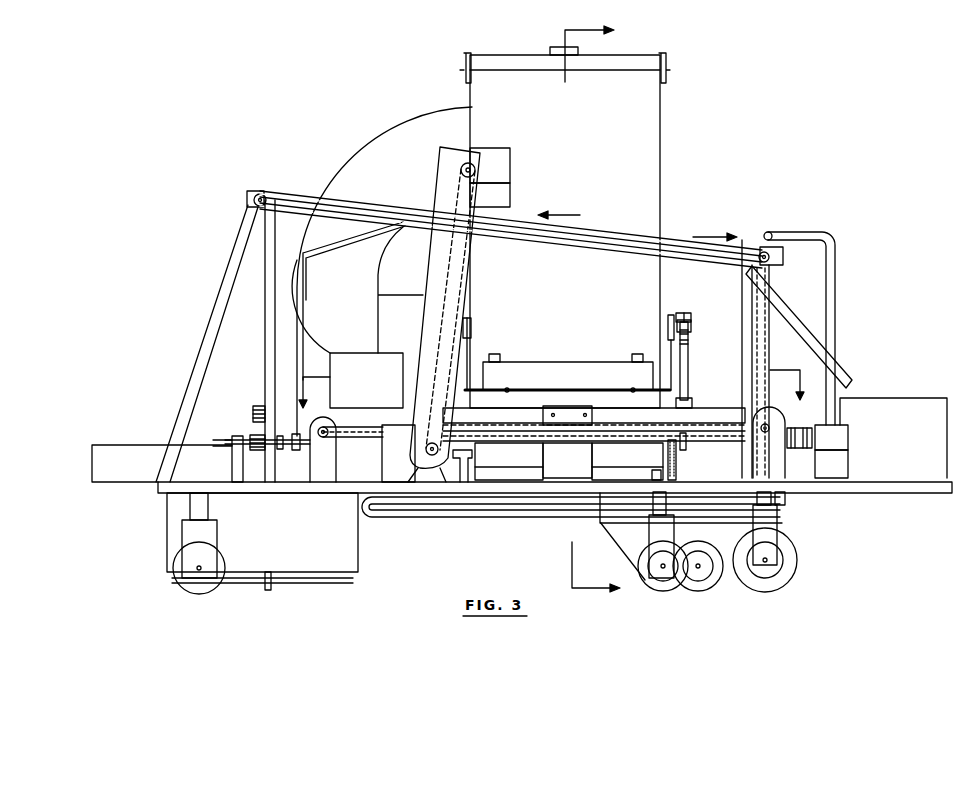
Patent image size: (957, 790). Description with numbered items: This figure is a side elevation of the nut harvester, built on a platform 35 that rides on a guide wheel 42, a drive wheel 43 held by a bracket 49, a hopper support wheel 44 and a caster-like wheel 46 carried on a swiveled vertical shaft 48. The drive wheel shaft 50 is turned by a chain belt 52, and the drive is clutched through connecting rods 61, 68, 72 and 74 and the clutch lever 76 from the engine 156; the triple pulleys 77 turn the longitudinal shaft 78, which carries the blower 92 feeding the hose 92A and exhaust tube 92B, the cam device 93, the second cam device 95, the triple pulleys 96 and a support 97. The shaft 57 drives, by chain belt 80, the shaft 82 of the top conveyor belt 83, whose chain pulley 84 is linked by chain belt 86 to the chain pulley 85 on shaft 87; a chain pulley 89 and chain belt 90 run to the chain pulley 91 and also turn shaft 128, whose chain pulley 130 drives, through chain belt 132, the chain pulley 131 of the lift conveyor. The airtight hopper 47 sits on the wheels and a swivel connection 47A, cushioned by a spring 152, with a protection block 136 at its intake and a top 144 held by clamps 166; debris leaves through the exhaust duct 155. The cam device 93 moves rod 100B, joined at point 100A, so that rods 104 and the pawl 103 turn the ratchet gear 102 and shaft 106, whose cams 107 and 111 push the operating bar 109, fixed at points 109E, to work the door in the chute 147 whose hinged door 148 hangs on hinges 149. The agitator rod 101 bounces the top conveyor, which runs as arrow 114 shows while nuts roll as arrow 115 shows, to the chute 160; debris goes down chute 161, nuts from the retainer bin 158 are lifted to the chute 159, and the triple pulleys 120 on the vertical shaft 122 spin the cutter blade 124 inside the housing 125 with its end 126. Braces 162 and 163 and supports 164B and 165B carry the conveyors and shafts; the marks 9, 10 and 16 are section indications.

The section line 9 is at (598, 309).
The drum 10 is at (400, 313).
The section arrow 16 is at (552, 397).
The platform 35 is at (163, 488).
The guide wheel 42 is at (172, 578).
The drive wheel 43 is at (795, 572).
The wheel 44 is at (708, 590).
The wheel 46 is at (660, 592).
The hopper 47 is at (661, 157).
The swivel connection 47A is at (468, 482).
The swiveled vertical shaft 48 is at (655, 470).
The bracket 49 is at (775, 535).
The shaft 50 is at (765, 562).
The chain belt 52 is at (782, 523).
The shaft 57 is at (775, 466).
The connecting rod 61 is at (560, 511).
The connecting rod 68 is at (548, 515).
The connecting rod 72 is at (785, 498).
The connecting rod 74 is at (420, 512).
The clutch lever 76 is at (368, 498).
The triple pulleys 77 is at (805, 448).
The shaft 78 is at (525, 445).
The chain belt 80 is at (770, 280).
The shaft 82 is at (783, 257).
The top conveyor belt 83 is at (415, 198).
The chain pulley 84 is at (748, 262).
The chain pulley 85 is at (264, 196).
The chain belt 86 is at (590, 243).
The shaft 87 is at (250, 192).
The chain pulley 89 is at (768, 423).
The chain belt 90 is at (702, 422).
The chain pulley 91 is at (326, 440).
The blower 92 is at (848, 443).
The hose 92A is at (836, 268).
The exhaust tube 92B is at (770, 228).
The cam device 93 is at (686, 445).
The cam device 95 is at (296, 450).
The triple pulleys 96 is at (253, 436).
The support 97 is at (232, 475).
The swivel connection point 100A is at (690, 398).
The rod 100B is at (688, 370).
The agitator rod 101 is at (306, 288).
The ratchet gear 102 is at (687, 320).
The pawl 103 is at (690, 331).
The rods 104 is at (690, 345).
The shaft 106 is at (472, 328).
The cam 107 is at (684, 313).
The operating bar 109 is at (468, 377).
The attachment points 109E is at (471, 319).
The cam 111 is at (472, 335).
The arrow 114 is at (574, 215).
The arrow 115 is at (700, 237).
The triple pulleys 120 is at (256, 406).
The vertical shaft 122 is at (272, 588).
The cutter blade 124 is at (245, 583).
The metal housing 125 is at (210, 440).
The end 126 is at (92, 462).
The shaft 128 is at (465, 480).
The chain pulley 130 is at (420, 478).
The chain pulley 131 is at (460, 166).
The chain belt 132 is at (470, 256).
The protection block 136 is at (620, 540).
The top 144 is at (585, 62).
The chute 147 is at (546, 360).
The hinged door 148 is at (548, 372).
The hinges 149 is at (498, 362).
The spring 152 is at (678, 462).
The exhaust duct 155 is at (378, 360).
The engine 156 is at (878, 410).
The retainer bin 158 is at (400, 430).
The chute 159 is at (494, 165).
The chute 160 is at (835, 365).
The chute 161 is at (207, 306).
The brace 162 is at (265, 332).
The brace 163 is at (745, 352).
The support 164B is at (325, 470).
The support 165B is at (764, 466).
The clamps 166 is at (466, 55).